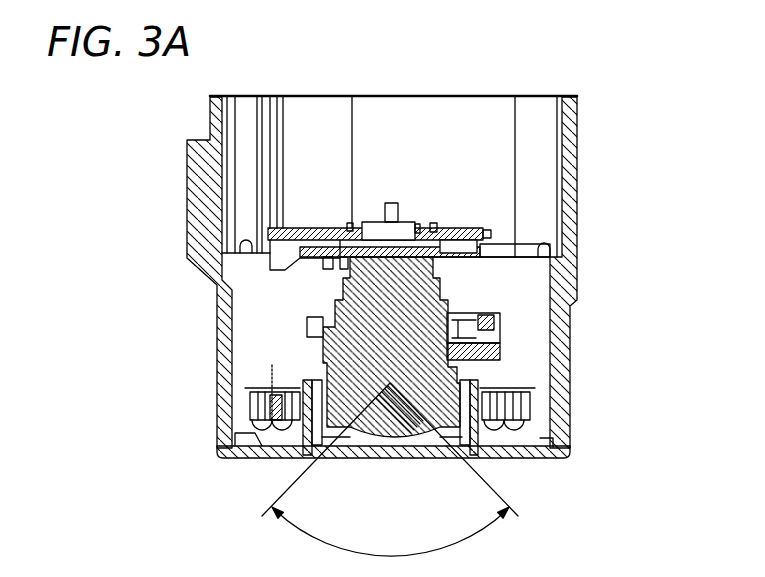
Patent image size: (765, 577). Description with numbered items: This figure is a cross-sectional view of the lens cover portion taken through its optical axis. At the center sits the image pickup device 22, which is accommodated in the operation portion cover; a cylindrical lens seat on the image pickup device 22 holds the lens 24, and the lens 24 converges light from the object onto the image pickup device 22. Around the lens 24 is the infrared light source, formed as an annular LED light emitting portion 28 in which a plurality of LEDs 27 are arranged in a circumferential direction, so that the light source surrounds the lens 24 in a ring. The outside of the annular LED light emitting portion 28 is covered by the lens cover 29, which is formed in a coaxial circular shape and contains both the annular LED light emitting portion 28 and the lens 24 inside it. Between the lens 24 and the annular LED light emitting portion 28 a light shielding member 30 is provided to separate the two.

The image pickup device 22 is at (398, 233).
The lens 24 is at (400, 456).
The LEDs 27 is at (514, 436).
The annular LED light emitting portion 28 is at (258, 451).
The lens cover 29 is at (535, 470).
The light shielding member 30 is at (484, 386).